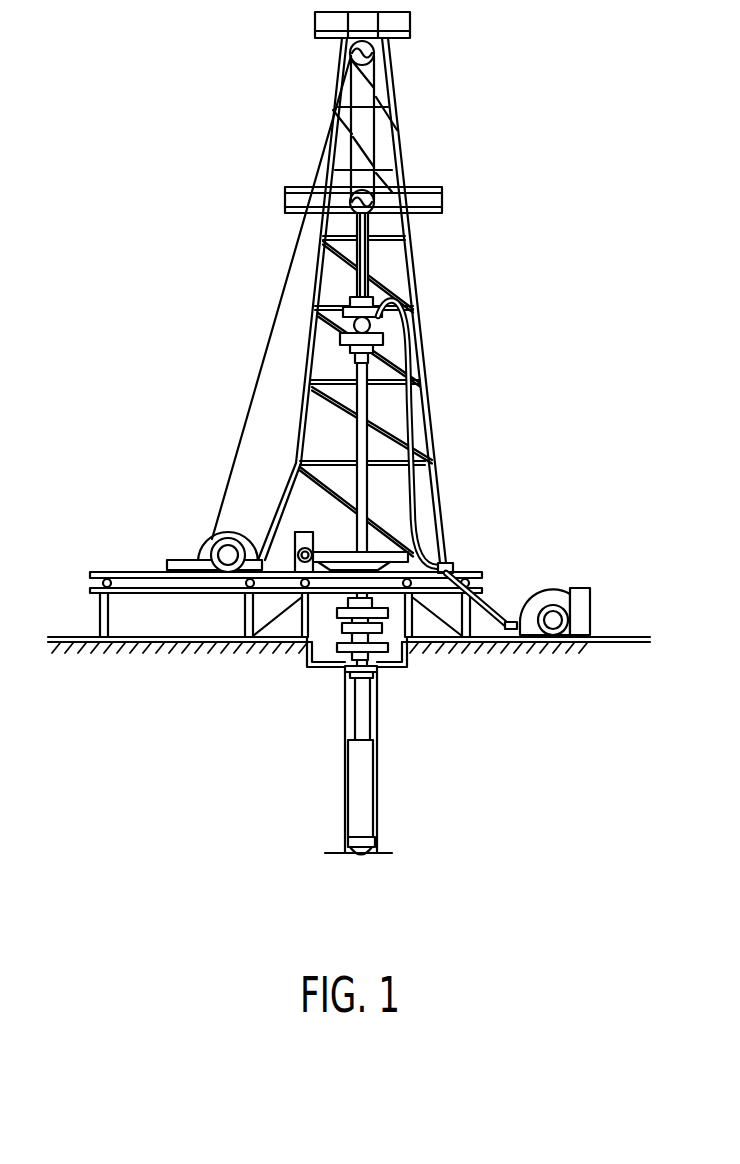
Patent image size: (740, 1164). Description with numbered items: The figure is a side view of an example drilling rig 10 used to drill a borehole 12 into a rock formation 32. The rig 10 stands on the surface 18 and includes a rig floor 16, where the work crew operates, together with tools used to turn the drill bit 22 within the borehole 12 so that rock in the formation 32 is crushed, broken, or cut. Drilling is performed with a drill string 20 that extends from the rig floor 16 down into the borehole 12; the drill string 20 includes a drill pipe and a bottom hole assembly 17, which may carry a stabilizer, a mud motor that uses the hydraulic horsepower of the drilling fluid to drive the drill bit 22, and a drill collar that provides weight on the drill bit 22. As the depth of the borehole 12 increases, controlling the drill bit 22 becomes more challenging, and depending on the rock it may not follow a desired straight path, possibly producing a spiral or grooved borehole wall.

The drilling rig 10 is at (122, 163).
The borehole 12 is at (345, 748).
The rig floor 16 is at (123, 572).
The bottom hole assembly 17 is at (372, 802).
The surface 18 is at (82, 636).
The drill string 20 is at (368, 717).
The drill bit 22 is at (363, 850).
The rock formation 32 is at (110, 733).